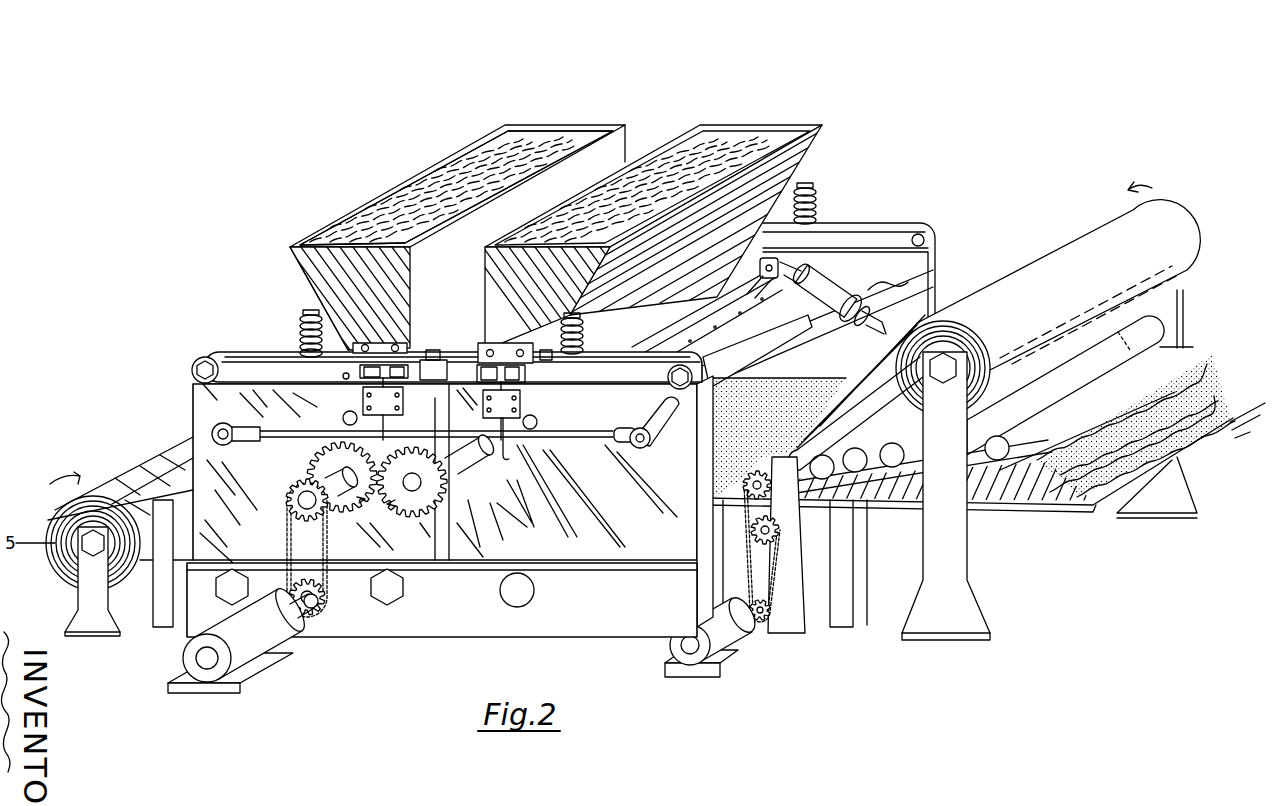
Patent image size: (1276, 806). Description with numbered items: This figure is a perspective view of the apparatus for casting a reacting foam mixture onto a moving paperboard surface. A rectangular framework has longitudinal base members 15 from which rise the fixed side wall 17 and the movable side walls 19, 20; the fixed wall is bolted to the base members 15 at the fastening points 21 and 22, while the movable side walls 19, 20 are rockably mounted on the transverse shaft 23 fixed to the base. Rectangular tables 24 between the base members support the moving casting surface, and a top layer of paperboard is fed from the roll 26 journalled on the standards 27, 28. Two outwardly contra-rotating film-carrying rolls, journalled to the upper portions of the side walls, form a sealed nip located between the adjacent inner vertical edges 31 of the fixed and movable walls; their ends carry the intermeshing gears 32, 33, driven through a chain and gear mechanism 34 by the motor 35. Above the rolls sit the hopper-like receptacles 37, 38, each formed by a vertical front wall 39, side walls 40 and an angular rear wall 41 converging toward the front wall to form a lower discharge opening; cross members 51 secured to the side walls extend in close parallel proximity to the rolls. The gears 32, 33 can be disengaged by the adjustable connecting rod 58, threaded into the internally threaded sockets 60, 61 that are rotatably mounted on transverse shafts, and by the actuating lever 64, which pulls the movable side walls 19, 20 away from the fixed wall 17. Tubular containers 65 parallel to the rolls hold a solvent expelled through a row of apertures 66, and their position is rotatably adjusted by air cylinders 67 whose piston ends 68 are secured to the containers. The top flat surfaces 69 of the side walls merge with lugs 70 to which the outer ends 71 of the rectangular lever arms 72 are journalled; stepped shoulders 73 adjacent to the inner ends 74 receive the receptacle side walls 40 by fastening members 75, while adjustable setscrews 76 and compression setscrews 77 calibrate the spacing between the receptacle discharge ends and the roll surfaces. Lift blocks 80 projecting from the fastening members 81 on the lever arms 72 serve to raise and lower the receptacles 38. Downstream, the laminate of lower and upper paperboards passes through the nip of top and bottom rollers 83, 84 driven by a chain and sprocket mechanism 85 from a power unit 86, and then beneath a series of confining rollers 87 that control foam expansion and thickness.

The base member 15 is at (650, 607).
The fixed side wall 17 is at (207, 492).
The movable side wall 19 is at (453, 501).
The movable side wall 20 is at (917, 285).
The fastening point 21 is at (228, 597).
The fastening point 22 is at (392, 600).
The transverse shaft 23 is at (517, 594).
The rectangular-shaped table 24 is at (1085, 513).
The roll 26 is at (1145, 218).
The standard 27 is at (92, 617).
The standard 28 is at (940, 543).
The inner vertical edge 31 is at (440, 556).
The intermeshing gear 32 is at (325, 466).
The intermeshing gear 33 is at (440, 484).
The chain and gear mechanism 34 is at (335, 578).
The motor 35 is at (245, 645).
The receptacle 37 is at (475, 183).
The receptacle 38 is at (723, 150).
The vertical front wall 39 is at (442, 192).
The side wall 40 is at (335, 245).
The angular rear wall 41 is at (303, 273).
The cross member 51 is at (757, 351).
The adjustable connecting rod 58 is at (574, 439).
The internally threaded socket 60 is at (246, 440).
The internally threaded socket 61 is at (622, 428).
The actuating lever 64 is at (667, 413).
The tubular container 65 is at (672, 337).
The aperture 66 is at (707, 310).
The air cylinder 67 is at (832, 296).
The piston end 68 is at (762, 286).
The top flat surface 69 is at (840, 248).
The lug 70 is at (196, 358).
The outer end 71 is at (220, 340).
The lever arm 72 is at (273, 341).
The stepped shoulder 73 is at (490, 345).
The inner end 74 is at (440, 362).
The fastening member 75 is at (400, 362).
The adjustable setscrew 76 is at (344, 382).
The compression setscrew 77 is at (298, 316).
The lift block 80 is at (497, 375).
The fastening member 81 is at (387, 343).
The top roller 83 is at (835, 500).
The bottom roller 84 is at (810, 532).
The chain and sprocket mechanism 85 is at (790, 600).
The power unit 86 is at (760, 670).
The confining roller 87 is at (1160, 330).